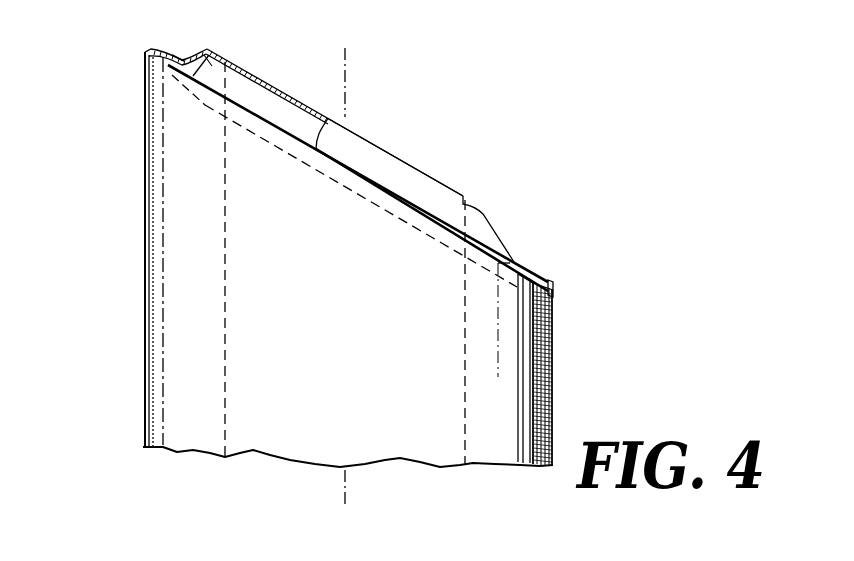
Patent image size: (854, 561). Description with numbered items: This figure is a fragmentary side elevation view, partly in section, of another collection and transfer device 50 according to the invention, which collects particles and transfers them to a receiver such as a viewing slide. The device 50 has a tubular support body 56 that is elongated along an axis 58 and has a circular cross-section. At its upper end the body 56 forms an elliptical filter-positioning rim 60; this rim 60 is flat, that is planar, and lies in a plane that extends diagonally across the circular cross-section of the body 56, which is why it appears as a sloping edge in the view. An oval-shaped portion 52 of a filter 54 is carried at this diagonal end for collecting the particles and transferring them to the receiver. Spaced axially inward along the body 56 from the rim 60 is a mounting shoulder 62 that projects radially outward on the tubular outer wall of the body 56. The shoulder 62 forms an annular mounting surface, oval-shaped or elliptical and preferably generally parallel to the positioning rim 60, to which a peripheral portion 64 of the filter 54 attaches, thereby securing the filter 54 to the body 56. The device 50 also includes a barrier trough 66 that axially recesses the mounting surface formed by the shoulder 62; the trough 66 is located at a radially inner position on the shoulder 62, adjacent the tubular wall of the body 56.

The device 50 is at (128, 211).
The oval-shaped portion 52 is at (358, 136).
The filter 54 is at (470, 187).
The tubular support body 56 is at (532, 362).
The axis 58 is at (346, 497).
The filter-positioning rim 60 is at (210, 60).
The mounting shoulder 62 is at (150, 63).
The peripheral portion 64 is at (524, 280).
The barrier trough 66 is at (190, 50).